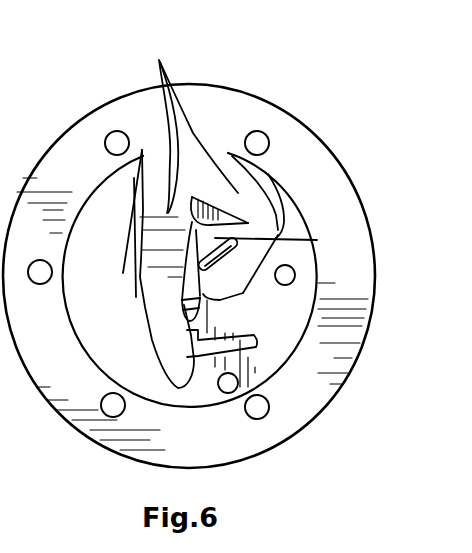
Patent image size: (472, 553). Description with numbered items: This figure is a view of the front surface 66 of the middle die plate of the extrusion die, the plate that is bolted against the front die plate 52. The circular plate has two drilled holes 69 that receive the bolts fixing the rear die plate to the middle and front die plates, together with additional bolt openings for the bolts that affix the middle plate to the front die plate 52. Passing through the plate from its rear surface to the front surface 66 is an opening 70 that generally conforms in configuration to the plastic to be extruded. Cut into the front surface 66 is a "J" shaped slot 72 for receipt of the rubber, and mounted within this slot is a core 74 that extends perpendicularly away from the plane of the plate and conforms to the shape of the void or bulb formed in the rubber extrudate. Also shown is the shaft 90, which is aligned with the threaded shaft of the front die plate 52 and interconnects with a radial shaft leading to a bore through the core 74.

The front die plate 52 is at (80, 93).
The front surface 66 is at (300, 142).
The drilled holes 69 is at (261, 97).
The opening 70 is at (257, 341).
The "J" shaped slot 72 is at (159, 62).
The core 74 is at (317, 240).
The shaft 90 is at (295, 280).